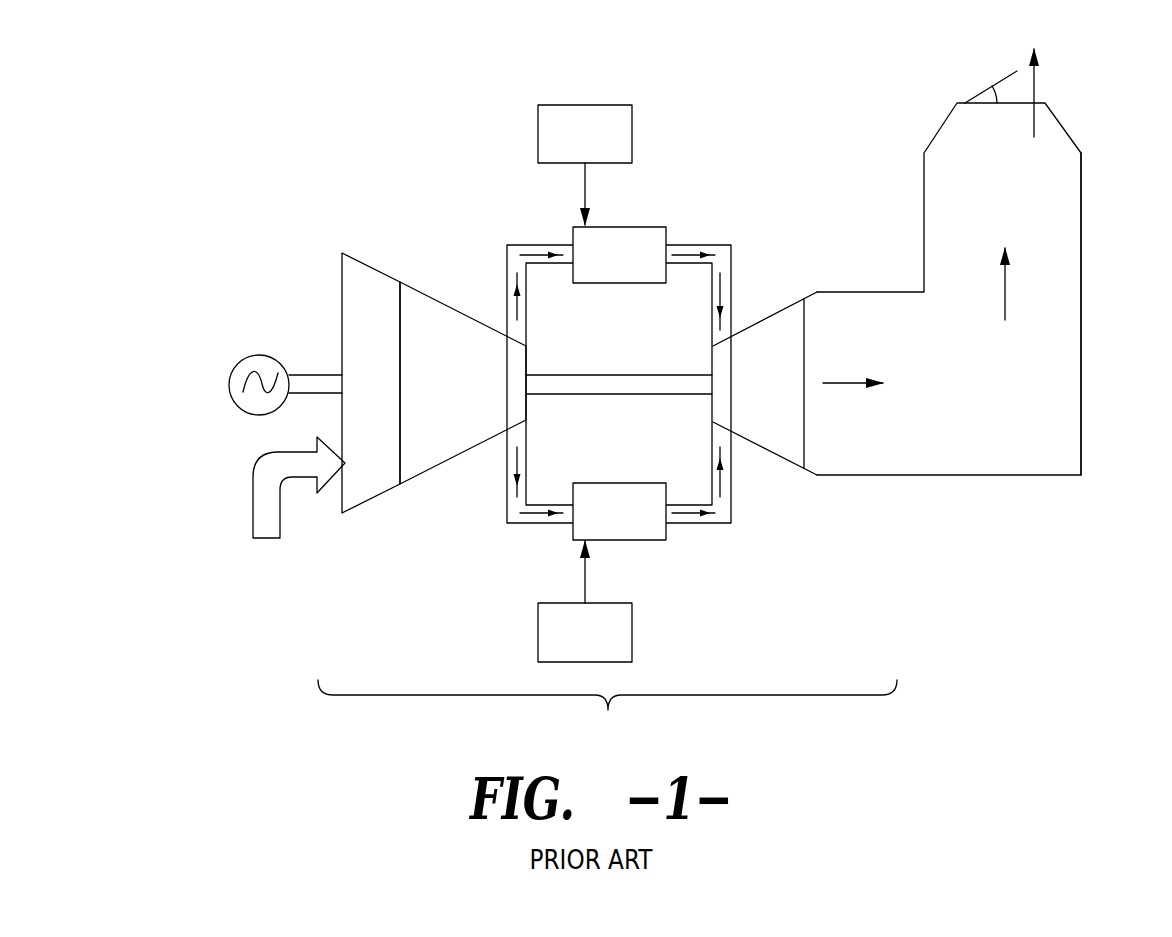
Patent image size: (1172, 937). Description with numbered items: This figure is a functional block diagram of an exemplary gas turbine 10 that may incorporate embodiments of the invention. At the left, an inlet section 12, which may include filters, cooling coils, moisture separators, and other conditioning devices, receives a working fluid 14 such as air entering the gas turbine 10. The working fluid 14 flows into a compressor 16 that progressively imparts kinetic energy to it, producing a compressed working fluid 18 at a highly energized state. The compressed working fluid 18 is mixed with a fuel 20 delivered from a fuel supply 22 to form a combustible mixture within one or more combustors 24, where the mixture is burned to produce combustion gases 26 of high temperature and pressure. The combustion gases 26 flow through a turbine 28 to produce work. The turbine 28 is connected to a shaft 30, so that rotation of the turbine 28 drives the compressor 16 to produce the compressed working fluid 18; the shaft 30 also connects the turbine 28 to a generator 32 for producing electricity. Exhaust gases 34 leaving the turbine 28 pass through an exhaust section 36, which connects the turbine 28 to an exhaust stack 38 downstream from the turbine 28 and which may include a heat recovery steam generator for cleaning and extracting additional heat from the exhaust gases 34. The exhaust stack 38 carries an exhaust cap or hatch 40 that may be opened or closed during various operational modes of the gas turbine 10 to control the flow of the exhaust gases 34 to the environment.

The gas turbine 10 is at (607, 714).
The inlet section 12 is at (385, 395).
The working fluid 14 is at (266, 540).
The compressor 16 is at (469, 395).
The compressed working fluid 18 is at (522, 308).
The fuel 20 is at (585, 180).
The fuel supply 22 is at (571, 152).
The combustors 24 is at (606, 273).
The combustion gases 26 is at (725, 287).
The turbine 28 is at (741, 397).
The shaft 30 is at (613, 394).
The generator 32 is at (249, 355).
The exhaust gases 34 is at (840, 386).
The exhaust section 36 is at (986, 410).
The exhaust stack 38 is at (1083, 231).
The exhaust cap or hatch 40 is at (1007, 72).